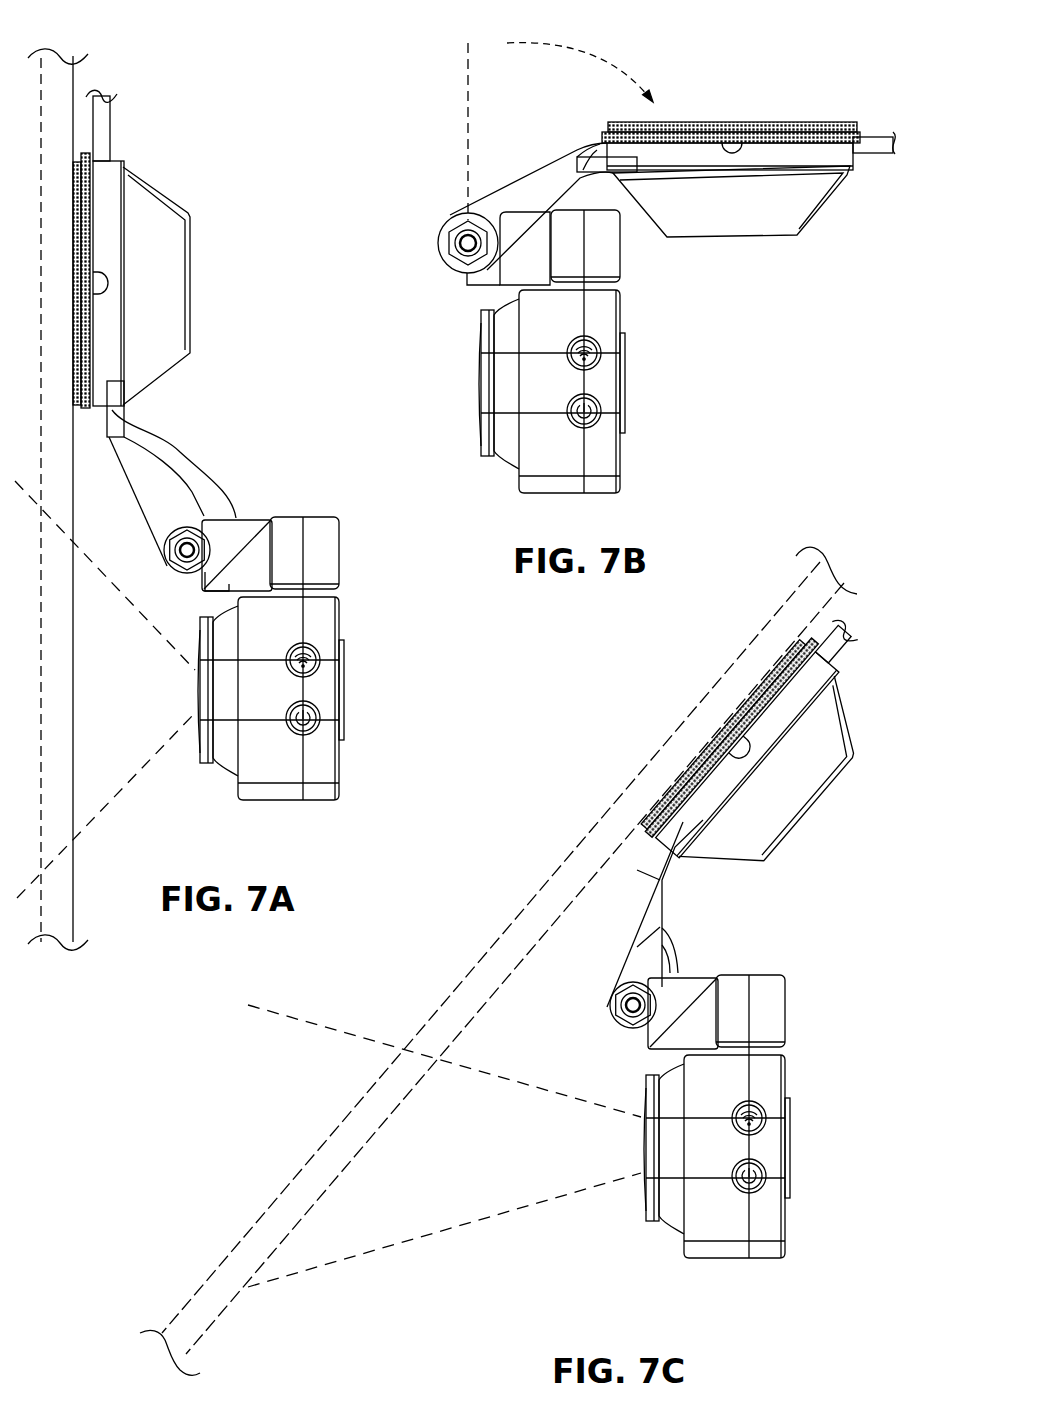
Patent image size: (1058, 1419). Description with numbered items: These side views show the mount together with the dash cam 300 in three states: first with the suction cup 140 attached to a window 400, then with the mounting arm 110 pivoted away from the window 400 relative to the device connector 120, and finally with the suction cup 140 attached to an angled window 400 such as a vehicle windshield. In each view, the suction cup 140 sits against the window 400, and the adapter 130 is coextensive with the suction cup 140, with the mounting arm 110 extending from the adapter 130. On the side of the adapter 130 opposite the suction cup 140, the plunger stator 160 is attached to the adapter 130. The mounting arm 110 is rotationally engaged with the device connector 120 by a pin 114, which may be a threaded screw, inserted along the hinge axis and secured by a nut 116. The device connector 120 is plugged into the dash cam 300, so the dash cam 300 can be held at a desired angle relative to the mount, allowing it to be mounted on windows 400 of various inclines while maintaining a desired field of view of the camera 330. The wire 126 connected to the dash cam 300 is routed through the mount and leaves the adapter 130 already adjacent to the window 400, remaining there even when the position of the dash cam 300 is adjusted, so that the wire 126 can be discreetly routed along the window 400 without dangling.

In FIG. 7A, the mounting arm 110 is at (139, 471).
In FIG. 7B, the mounting arm 110 is at (530, 188).
In FIG. 7C, the mounting arm 110 is at (648, 915).
In FIG. 7A, the pin 114 is at (185, 560).
In FIG. 7B, the pin 114 is at (462, 245).
In FIG. 7C, the pin 114 is at (622, 1020).
In FIG. 7A, the nut 116 is at (166, 550).
In FIG. 7B, the nut 116 is at (450, 230).
In FIG. 7C, the nut 116 is at (612, 997).
In FIG. 7A, the device connector 120 is at (259, 539).
In FIG. 7B, the device connector 120 is at (497, 280).
In FIG. 7C, the device connector 120 is at (673, 1033).
In FIG. 7A, the wire 126 is at (111, 116).
In FIG. 7B, the wire 126 is at (590, 145).
In FIG. 7C, the wire 126 is at (838, 640).
In FIG. 7A, the adapter 130 is at (111, 166).
In FIG. 7B, the adapter 130 is at (807, 150).
In FIG. 7C, the adapter 130 is at (808, 682).
In FIG. 7A, the suction cup 140 is at (79, 419).
In FIG. 7B, the suction cup 140 is at (760, 122).
In FIG. 7C, the suction cup 140 is at (642, 833).
In FIG. 7A, the plunger stator 160 is at (175, 328).
In FIG. 7B, the plunger stator 160 is at (762, 227).
In FIG. 7C, the plunger stator 160 is at (782, 788).
In FIG. 7A, the dash cam 300 is at (327, 767).
In FIG. 7B, the dash cam 300 is at (603, 460).
In FIG. 7C, the dash cam 300 is at (773, 1222).
In FIG. 7A, the camera 330 is at (185, 699).
In FIG. 7B, the camera 330 is at (462, 399).
In FIG. 7C, the camera 330 is at (627, 1147).
In FIG. 7A, the window 400 is at (71, 81).
In FIG. 7C, the window 400 is at (764, 627).